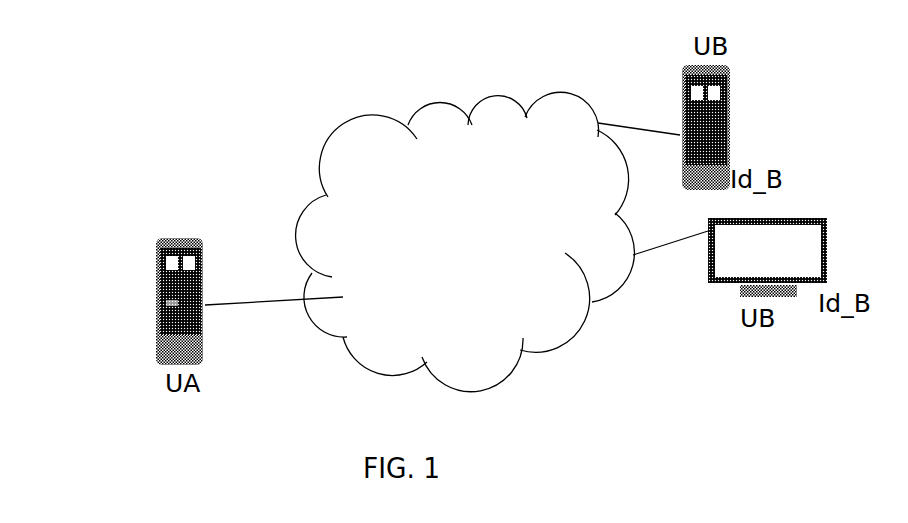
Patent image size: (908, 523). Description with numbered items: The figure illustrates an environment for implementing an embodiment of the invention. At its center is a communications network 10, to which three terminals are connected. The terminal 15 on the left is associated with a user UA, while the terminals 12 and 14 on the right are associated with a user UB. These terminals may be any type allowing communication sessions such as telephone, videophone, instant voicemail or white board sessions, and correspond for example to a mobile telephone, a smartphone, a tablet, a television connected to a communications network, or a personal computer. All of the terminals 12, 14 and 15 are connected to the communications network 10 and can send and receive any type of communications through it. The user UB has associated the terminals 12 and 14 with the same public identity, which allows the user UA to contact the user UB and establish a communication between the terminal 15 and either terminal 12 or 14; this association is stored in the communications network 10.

The communications network 10 is at (505, 363).
The terminal 12 is at (832, 258).
The terminal 14 is at (730, 145).
The terminal 15 is at (155, 268).